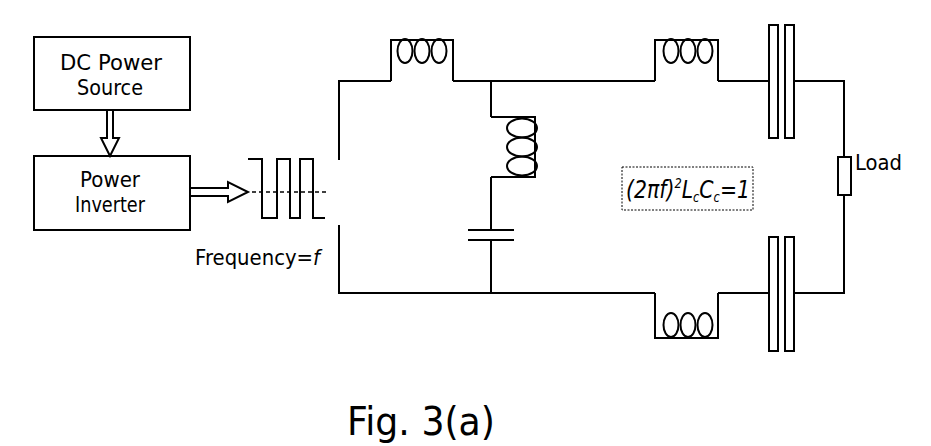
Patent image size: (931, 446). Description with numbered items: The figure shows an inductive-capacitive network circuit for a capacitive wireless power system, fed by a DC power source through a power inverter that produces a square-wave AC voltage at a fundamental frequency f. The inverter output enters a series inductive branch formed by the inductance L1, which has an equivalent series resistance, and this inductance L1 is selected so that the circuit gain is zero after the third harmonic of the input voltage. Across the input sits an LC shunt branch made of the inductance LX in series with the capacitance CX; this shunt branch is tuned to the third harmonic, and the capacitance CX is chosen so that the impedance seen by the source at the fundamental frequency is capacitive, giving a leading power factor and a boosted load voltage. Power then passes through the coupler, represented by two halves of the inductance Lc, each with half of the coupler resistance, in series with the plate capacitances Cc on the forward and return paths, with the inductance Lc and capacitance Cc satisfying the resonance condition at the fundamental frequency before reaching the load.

The series inductive branch inductance L1 is at (422, 71).
The shunt branch inductance LX is at (493, 147).
The shunt branch capacitance CX is at (473, 242).
The equivalent coupler inductance Lc is at (690, 188).
The coupling capacitance Cc is at (780, 188).